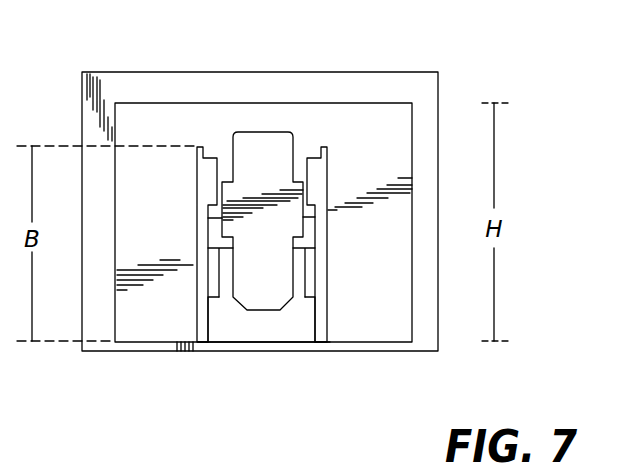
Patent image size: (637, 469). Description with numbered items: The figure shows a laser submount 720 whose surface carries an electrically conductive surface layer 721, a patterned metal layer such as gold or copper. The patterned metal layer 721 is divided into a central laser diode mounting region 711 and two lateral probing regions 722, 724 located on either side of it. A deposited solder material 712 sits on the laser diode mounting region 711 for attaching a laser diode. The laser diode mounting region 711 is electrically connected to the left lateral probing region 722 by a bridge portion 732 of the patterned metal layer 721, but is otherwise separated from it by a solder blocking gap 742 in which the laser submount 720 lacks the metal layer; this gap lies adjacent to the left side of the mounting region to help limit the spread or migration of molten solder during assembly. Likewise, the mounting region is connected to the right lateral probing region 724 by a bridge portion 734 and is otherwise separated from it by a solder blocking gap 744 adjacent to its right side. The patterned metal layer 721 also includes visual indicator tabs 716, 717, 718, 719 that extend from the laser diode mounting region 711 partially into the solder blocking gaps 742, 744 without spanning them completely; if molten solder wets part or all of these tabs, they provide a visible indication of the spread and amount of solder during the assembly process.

The laser diode mounting region 711 is at (267, 328).
The deposited solder material 712 is at (275, 152).
The visual indicator tab 716 is at (315, 320).
The visual indicator tab 717 is at (207, 320).
The visual indicator tab 718 is at (315, 237).
The visual indicator tab 719 is at (208, 221).
The laser submount 720 is at (112, 83).
The electrically conductive surface layer 721 is at (138, 122).
The lateral probing region 722 is at (125, 330).
The lateral probing region 724 is at (388, 165).
The bridge portion 732 is at (203, 128).
The bridge portion 734 is at (322, 125).
The solder blocking gap 742 is at (210, 277).
The solder blocking gap 744 is at (317, 272).